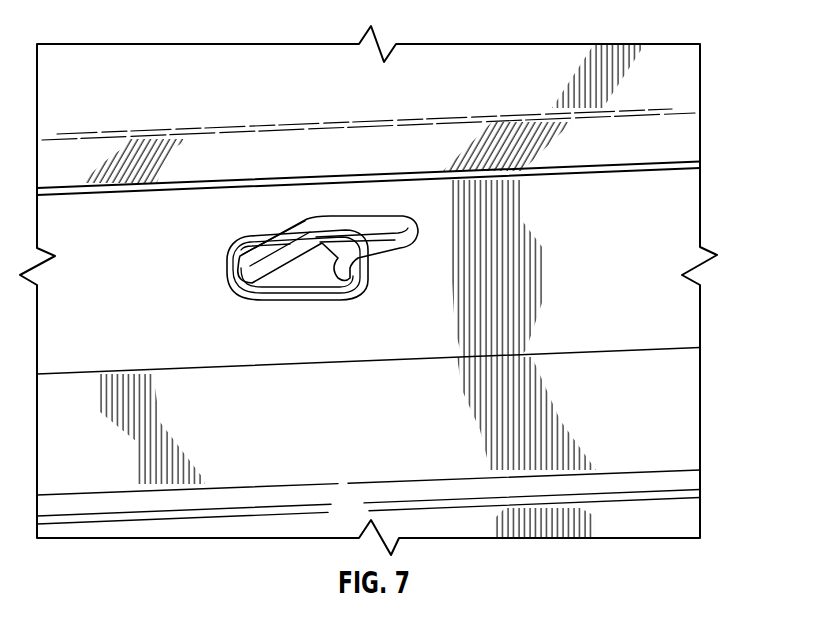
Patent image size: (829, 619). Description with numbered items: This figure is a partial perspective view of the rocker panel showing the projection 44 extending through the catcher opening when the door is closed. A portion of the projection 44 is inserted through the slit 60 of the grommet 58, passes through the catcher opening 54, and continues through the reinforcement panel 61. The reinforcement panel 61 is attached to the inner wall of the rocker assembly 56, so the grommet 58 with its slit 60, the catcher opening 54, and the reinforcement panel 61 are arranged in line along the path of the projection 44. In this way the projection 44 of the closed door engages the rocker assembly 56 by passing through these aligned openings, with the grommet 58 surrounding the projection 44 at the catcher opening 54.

The projection 44 is at (390, 223).
The catcher opening 54 is at (286, 309).
The rocker assembly 56 is at (635, 138).
The grommet 58 is at (310, 273).
The slit 60 is at (323, 267).
The reinforcement panel 61 is at (273, 216).